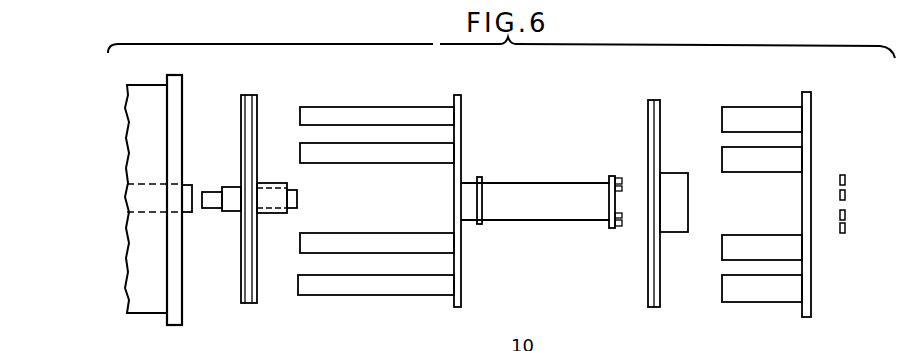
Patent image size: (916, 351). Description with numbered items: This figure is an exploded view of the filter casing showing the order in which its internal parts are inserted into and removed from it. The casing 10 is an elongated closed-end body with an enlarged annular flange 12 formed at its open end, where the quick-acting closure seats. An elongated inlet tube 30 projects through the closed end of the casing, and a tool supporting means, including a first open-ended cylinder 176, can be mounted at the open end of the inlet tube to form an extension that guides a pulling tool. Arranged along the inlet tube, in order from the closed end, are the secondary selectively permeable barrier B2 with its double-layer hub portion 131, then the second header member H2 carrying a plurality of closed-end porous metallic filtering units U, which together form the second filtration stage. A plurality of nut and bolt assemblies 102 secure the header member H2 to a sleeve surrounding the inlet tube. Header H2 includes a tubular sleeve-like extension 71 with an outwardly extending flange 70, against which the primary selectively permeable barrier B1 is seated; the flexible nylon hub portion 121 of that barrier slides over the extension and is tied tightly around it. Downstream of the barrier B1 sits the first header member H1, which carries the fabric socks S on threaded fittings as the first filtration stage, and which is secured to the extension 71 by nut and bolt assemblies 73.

The casing 10 is at (148, 75).
The annular flange 12 is at (177, 84).
The inlet tube 30 is at (189, 186).
The secondary selectively permeable barrier B2 is at (257, 115).
The first open-ended cylinder 176 is at (212, 206).
The hub portion 131 is at (270, 216).
The porous metallic filtering units U is at (364, 245).
The second header member H2 is at (462, 170).
The tubular sleeve-like extension 71 is at (515, 200).
The outwardly extending flange 70 is at (479, 223).
The nut and bolt assemblies 102 is at (617, 180).
The primary selectively permeable barrier B1 is at (662, 120).
The hub portion 121 is at (677, 223).
The closed-end sock S is at (747, 238).
The first header member H1 is at (812, 140).
The nut and bolt assemblies 73 is at (846, 180).